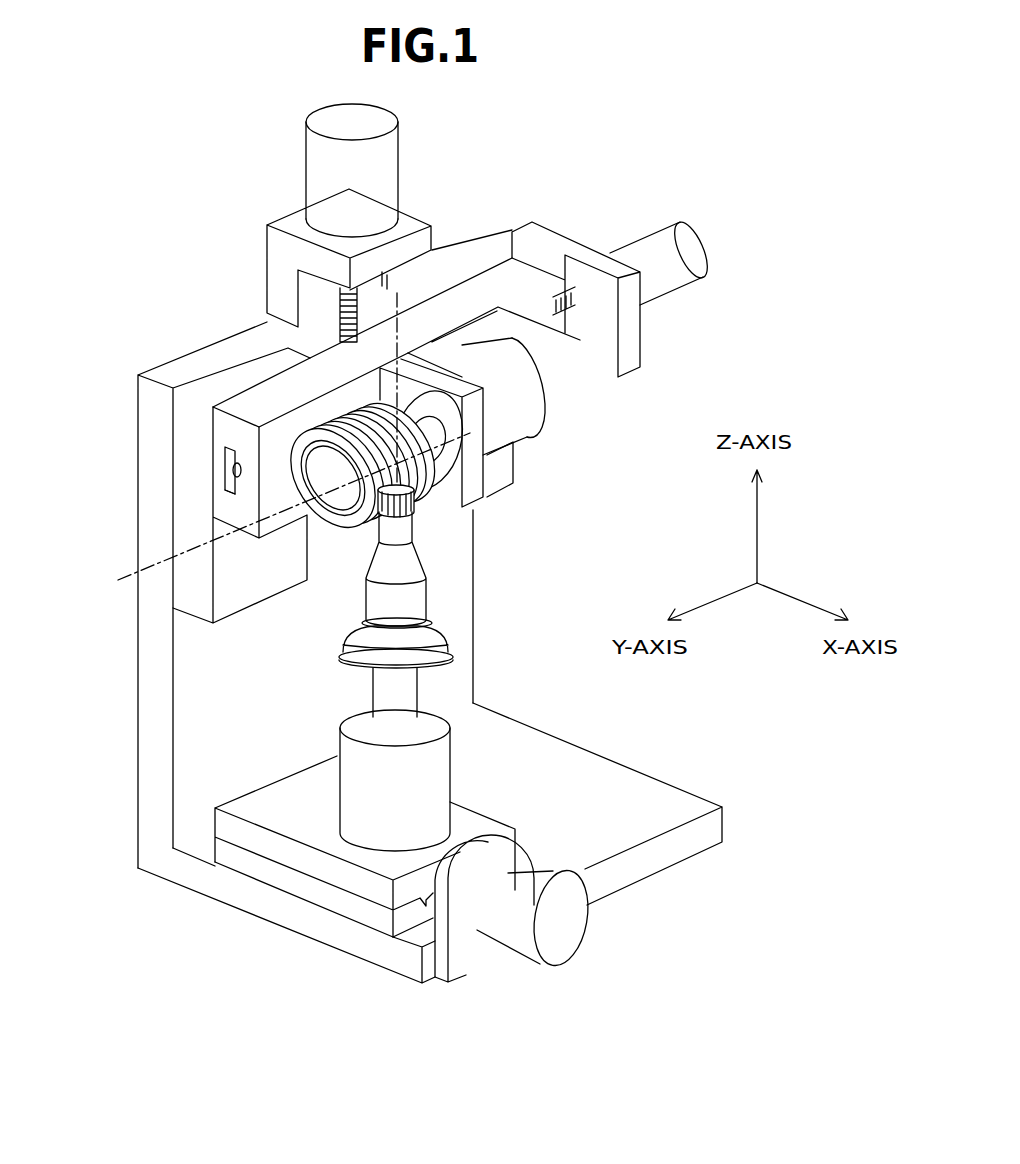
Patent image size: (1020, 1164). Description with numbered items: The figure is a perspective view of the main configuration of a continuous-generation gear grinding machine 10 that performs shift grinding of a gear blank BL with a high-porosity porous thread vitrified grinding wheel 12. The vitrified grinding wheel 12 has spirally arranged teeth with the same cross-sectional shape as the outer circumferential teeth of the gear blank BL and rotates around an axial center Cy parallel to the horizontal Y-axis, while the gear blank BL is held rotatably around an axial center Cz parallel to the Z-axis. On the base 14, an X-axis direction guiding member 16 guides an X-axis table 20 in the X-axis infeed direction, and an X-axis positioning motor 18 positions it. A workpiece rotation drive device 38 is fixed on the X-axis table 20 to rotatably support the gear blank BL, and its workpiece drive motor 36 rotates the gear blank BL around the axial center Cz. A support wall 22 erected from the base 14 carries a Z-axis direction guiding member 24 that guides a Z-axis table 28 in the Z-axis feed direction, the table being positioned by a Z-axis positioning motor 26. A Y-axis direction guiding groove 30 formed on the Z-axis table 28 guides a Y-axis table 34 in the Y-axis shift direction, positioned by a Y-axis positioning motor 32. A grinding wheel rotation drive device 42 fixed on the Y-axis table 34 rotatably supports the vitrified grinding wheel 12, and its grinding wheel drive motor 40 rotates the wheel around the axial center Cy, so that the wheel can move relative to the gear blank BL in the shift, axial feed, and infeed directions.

The continuous-generation gear grinding machine 10 is at (116, 264).
The vitrified grinding wheel 12 is at (340, 520).
The base 14 is at (708, 826).
The X-axis direction guiding member 16 is at (253, 870).
The X-axis positioning motor 18 is at (562, 925).
The X-axis table 20 is at (307, 860).
The support wall 22 is at (150, 700).
The Z-axis direction guiding member 24 is at (188, 438).
The Z-axis positioning motor 26 is at (320, 164).
The Z-axis table 28 is at (225, 467).
The Y-axis direction guiding groove 30 is at (225, 495).
The Y-axis positioning motor 32 is at (675, 235).
The Y-axis table 34 is at (268, 390).
The workpiece drive motor 36 is at (440, 760).
The workpiece rotation drive device 38 is at (341, 674).
The grinding wheel drive motor 40 is at (545, 402).
The grinding wheel rotation drive device 42 is at (541, 457).
The gear blank BL is at (425, 520).
The axial center Cz is at (390, 306).
The axial center Cy is at (120, 578).